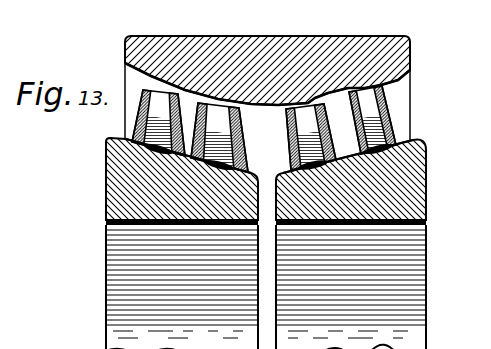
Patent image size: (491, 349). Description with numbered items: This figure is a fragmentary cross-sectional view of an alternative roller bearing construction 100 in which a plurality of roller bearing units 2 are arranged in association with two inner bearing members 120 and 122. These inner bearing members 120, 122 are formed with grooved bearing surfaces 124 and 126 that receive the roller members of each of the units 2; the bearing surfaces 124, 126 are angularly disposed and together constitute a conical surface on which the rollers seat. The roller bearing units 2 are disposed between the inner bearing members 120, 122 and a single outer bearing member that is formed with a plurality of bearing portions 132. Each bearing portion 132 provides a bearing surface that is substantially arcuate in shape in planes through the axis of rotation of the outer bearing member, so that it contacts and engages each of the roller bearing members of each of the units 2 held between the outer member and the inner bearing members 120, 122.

The tapered roller bearing assembly 100 is at (264, 178).
The bearing portions 132 is at (293, 93).
The roller bearing units 2 is at (367, 96).
The inner bearing member 120 is at (152, 183).
The inner bearing member 122 is at (379, 183).
The grooved bearing surface 124 is at (138, 152).
The grooved bearing surface 126 is at (392, 149).